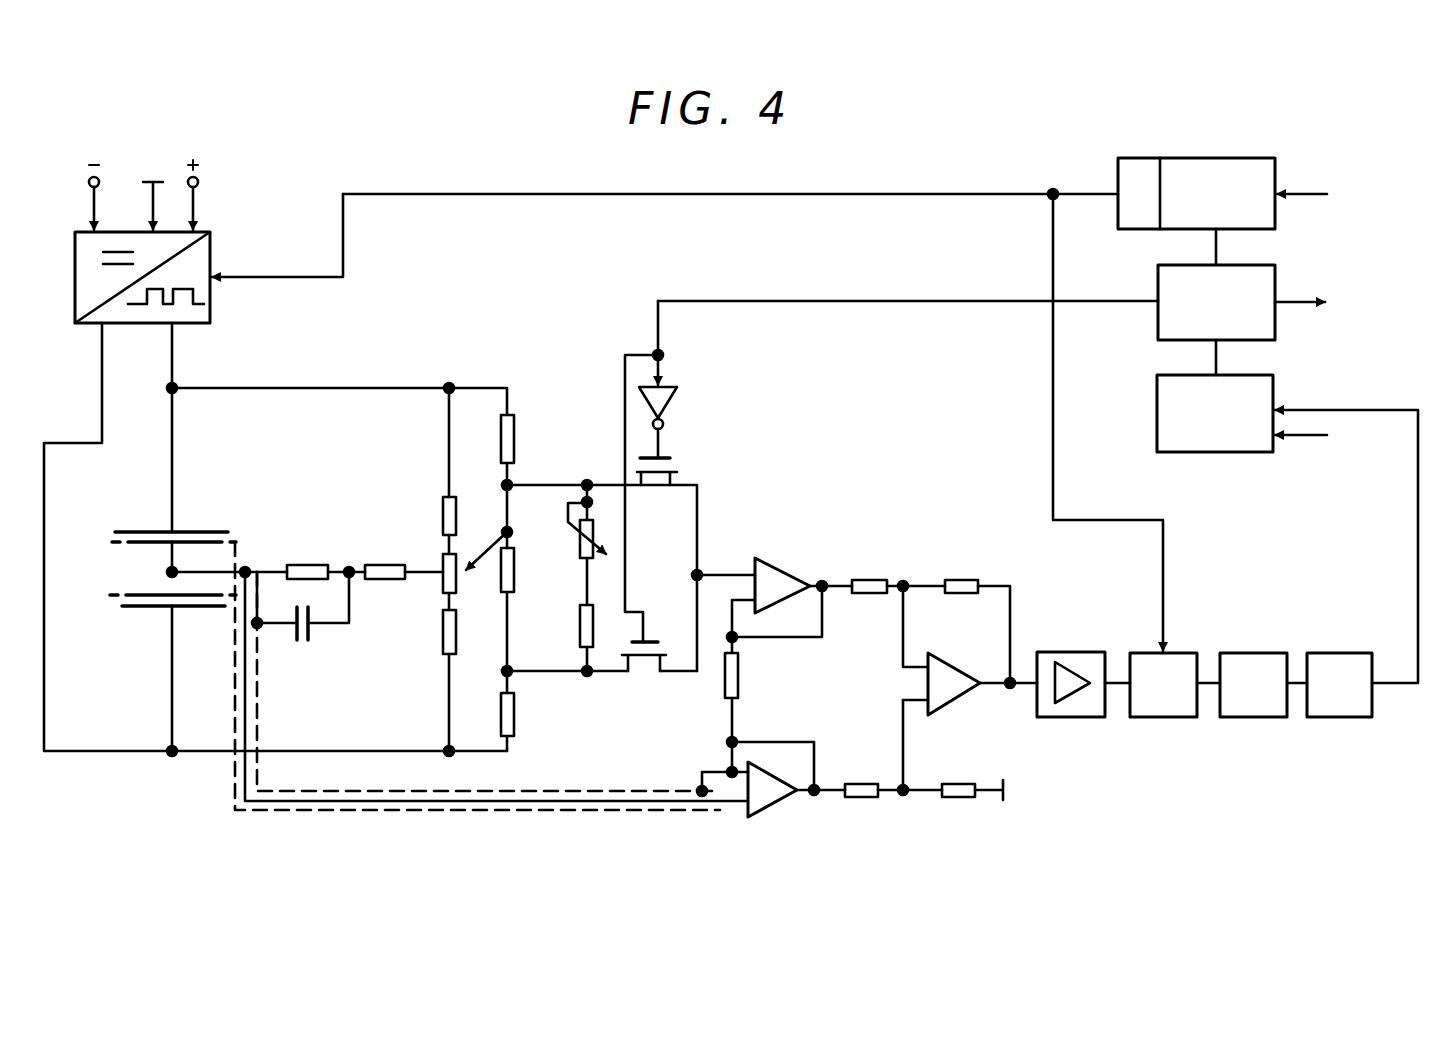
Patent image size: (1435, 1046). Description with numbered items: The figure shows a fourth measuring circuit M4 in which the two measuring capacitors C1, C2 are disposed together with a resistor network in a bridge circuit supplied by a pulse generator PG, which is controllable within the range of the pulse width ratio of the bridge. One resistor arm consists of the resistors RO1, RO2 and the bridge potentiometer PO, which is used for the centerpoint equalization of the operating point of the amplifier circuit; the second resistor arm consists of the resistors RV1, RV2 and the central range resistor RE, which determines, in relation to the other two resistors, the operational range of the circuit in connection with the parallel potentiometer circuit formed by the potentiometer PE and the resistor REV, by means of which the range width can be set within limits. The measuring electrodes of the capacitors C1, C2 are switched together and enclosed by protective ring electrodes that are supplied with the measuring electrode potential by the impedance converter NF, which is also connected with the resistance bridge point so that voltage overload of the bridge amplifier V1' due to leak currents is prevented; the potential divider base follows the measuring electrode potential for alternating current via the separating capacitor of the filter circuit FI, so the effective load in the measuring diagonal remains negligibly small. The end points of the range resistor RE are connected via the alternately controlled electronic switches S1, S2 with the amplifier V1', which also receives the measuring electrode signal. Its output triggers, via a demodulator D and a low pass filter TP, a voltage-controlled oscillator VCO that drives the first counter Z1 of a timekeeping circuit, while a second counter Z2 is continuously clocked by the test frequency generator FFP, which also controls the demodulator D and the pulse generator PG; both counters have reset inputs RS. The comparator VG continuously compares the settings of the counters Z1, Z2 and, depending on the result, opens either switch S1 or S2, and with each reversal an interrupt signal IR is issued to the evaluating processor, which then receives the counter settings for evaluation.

The pulse generator PG is at (212, 248).
The measuring capacitor C1 is at (190, 533).
The measuring capacitor C2 is at (150, 606).
The filter circuit FI is at (316, 580).
The resistor RO1 is at (443, 516).
The resistor RO2 is at (443, 642).
The bridge potentiometer PO is at (458, 585).
The central resistor RE is at (514, 572).
The resistor of parallel potentiometer circuit REV is at (580, 640).
The resistor RV1 is at (514, 448).
The resistor RV2 is at (538, 722).
The potentiometer of parallel potentiometer circuit PE is at (580, 545).
The electronic switch S1 is at (678, 393).
The electronic switch S2 is at (644, 531).
The measuring circuit M4 is at (903, 447).
The bridge amplifier V1' is at (772, 584).
The impedance converter NF is at (785, 802).
The test frequency generator FFP is at (1118, 176).
The second counter Z2 is at (1196, 193).
The reset input RS is at (1321, 315).
The comparator VG is at (1216, 302).
The interrupt signal IR is at (1317, 302).
The first counter Z1 is at (1215, 413).
The demodulator D is at (1163, 685).
The low pass filter TP is at (1253, 685).
The voltage-controlled oscillator VCO is at (1339, 685).